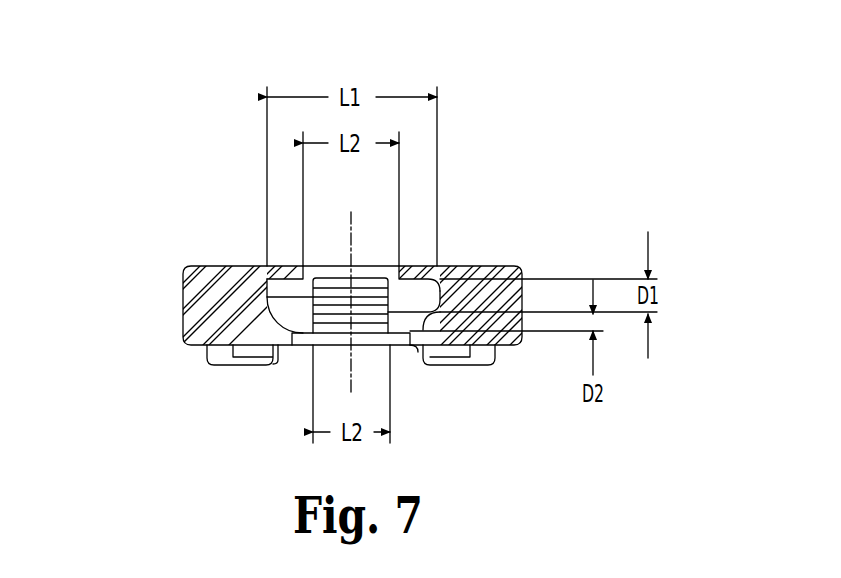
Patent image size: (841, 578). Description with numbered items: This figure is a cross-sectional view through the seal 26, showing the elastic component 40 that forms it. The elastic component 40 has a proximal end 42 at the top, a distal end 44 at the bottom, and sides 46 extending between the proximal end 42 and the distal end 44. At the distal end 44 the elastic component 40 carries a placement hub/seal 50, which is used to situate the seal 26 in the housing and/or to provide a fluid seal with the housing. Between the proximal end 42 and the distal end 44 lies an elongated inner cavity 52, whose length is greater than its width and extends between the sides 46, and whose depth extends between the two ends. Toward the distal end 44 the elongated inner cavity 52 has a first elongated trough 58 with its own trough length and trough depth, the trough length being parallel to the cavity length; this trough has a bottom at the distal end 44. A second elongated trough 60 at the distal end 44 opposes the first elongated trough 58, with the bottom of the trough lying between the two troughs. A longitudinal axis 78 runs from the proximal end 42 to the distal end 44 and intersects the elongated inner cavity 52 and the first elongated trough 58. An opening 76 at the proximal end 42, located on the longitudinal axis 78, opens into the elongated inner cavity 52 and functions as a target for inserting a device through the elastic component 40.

The seal 26 is at (565, 79).
The elastic component 40 is at (208, 262).
The proximal end 42 is at (180, 267).
The distal end 44 is at (180, 344).
The sides 46 is at (180, 307).
The placement hub/seal 50 is at (213, 367).
The elongated inner cavity 52 is at (273, 366).
The first elongated trough 58 is at (302, 347).
The second elongated trough 60 is at (400, 347).
The opening 76 is at (373, 260).
The longitudinal axis 78 is at (351, 228).